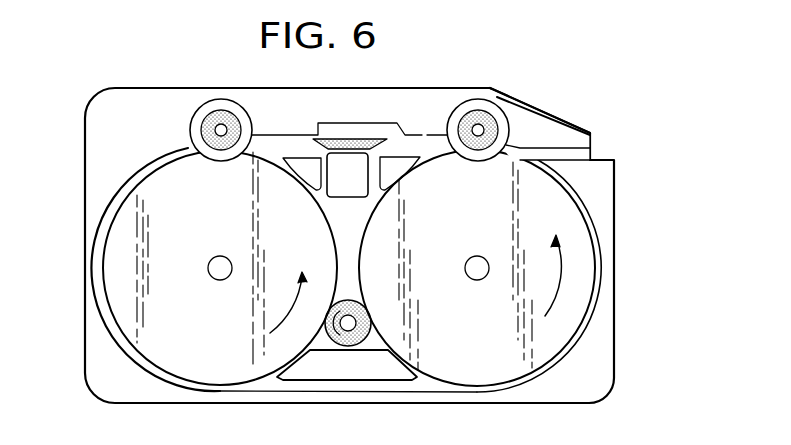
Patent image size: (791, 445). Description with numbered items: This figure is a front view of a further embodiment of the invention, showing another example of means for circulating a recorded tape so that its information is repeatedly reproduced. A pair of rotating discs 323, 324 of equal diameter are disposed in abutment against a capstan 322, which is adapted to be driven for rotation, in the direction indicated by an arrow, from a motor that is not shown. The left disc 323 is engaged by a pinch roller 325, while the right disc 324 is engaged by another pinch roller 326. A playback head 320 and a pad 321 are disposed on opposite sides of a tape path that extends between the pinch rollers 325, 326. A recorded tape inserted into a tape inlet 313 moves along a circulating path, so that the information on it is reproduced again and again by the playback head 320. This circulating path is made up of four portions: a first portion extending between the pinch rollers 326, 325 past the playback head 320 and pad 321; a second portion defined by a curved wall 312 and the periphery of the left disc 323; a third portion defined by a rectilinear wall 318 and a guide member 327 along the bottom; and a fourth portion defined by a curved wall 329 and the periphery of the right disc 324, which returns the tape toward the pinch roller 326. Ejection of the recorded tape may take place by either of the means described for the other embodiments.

The curved wall 312 is at (106, 221).
The tape inlet 313 is at (598, 152).
The rectilinear wall 318 is at (378, 389).
The playback head 320 is at (341, 155).
The pad 321 is at (347, 135).
The capstan 322 is at (348, 300).
The rotating disc 323 is at (212, 378).
The rotating disc 324 is at (483, 378).
The pinch roller 325 is at (222, 113).
The pinch roller 326 is at (478, 112).
The guide member 327 is at (323, 377).
The curved wall 329 is at (602, 243).